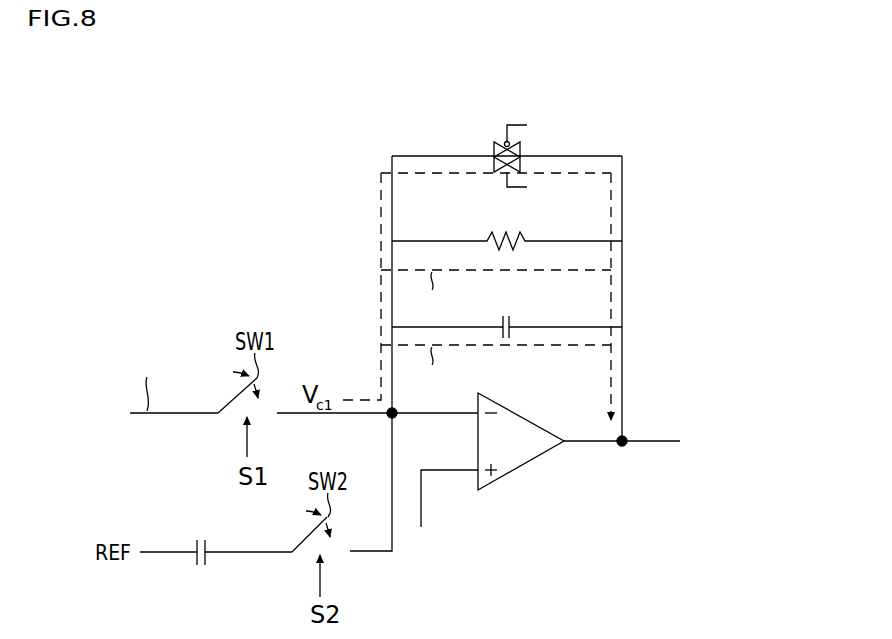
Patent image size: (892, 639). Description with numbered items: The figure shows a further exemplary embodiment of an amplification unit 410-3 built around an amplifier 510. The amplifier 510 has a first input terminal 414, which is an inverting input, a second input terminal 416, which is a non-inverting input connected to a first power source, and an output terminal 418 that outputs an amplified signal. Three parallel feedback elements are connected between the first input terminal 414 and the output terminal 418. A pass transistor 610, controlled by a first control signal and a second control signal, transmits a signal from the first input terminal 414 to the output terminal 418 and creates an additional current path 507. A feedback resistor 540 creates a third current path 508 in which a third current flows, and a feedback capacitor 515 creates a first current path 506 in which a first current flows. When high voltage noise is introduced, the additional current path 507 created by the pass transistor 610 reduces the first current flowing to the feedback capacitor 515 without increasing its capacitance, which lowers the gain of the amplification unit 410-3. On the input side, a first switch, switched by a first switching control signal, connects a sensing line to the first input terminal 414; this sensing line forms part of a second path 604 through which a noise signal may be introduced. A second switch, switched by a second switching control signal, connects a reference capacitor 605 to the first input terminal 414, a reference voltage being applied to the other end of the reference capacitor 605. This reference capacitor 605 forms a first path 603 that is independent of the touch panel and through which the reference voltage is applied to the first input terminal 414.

The amplification unit 410-3 is at (697, 140).
The additional current path 507 is at (611, 173).
The third current path 508 is at (611, 270).
The first current path 506 is at (611, 345).
The pass transistor 610 is at (494, 146).
The feedback resistor 540 is at (487, 241).
The feedback capacitor 515 is at (512, 320).
The amplifier 510 is at (521, 416).
The first input terminal 414 is at (448, 416).
The second input terminal 416 is at (448, 473).
The output terminal 418 is at (600, 444).
The second path 604 is at (183, 416).
The reference capacitor 605 is at (190, 565).
The first path 603 is at (253, 554).